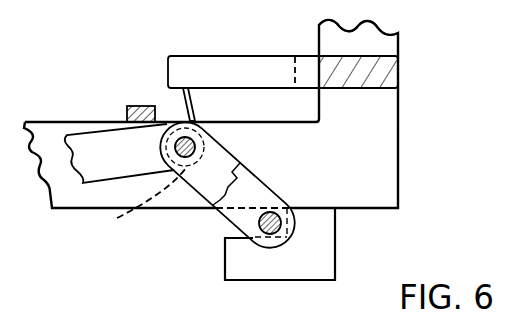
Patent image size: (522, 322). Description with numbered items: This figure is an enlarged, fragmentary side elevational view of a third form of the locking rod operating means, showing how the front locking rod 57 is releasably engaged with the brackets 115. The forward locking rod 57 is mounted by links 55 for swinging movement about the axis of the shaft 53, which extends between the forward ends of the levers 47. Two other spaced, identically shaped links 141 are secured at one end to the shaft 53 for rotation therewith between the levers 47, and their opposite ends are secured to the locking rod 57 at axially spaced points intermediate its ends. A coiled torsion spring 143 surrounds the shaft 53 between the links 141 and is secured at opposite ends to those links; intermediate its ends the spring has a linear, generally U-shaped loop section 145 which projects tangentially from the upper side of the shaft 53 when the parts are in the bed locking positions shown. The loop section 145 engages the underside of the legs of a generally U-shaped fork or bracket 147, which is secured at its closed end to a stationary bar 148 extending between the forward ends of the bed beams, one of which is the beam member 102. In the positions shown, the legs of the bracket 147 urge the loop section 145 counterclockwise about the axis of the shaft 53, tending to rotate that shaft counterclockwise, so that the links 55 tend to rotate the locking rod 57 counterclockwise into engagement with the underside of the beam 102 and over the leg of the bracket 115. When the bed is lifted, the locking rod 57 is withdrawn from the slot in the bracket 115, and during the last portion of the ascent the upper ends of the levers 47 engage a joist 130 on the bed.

The lever 47 is at (97, 138).
The shaft 53 is at (203, 150).
The link 55 is at (252, 187).
The bed locking rod 57 is at (273, 233).
The beam member 102 is at (383, 143).
The hook member or bracket 115 is at (326, 241).
The joist 130 is at (124, 106).
The link 141 is at (205, 188).
The coiled torsion spring 143 is at (120, 213).
The loop section 145 is at (182, 100).
The fork or bracket 147 is at (243, 54).
The stationary bar 148 is at (393, 73).